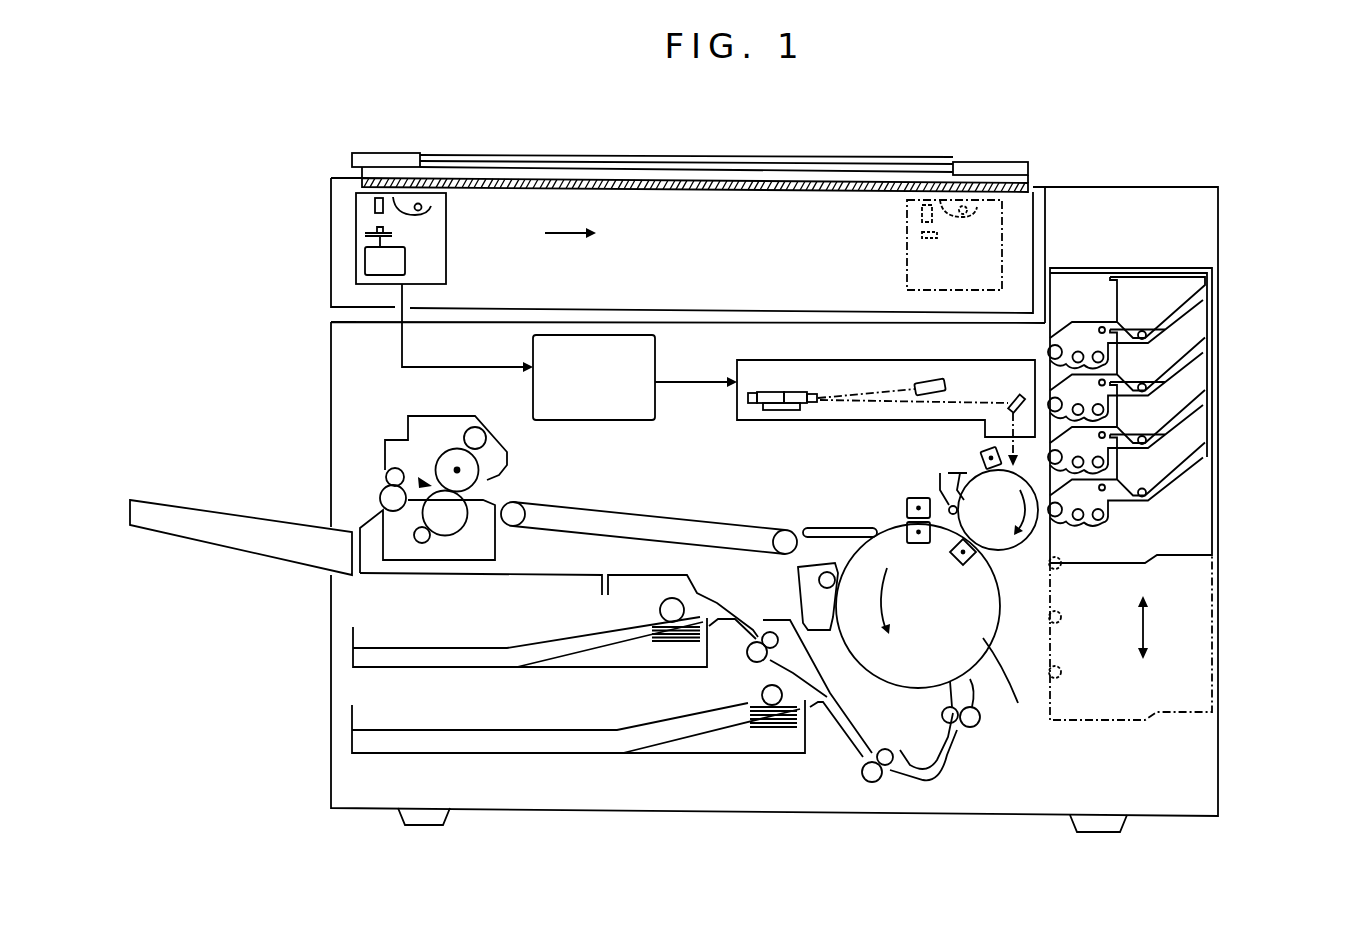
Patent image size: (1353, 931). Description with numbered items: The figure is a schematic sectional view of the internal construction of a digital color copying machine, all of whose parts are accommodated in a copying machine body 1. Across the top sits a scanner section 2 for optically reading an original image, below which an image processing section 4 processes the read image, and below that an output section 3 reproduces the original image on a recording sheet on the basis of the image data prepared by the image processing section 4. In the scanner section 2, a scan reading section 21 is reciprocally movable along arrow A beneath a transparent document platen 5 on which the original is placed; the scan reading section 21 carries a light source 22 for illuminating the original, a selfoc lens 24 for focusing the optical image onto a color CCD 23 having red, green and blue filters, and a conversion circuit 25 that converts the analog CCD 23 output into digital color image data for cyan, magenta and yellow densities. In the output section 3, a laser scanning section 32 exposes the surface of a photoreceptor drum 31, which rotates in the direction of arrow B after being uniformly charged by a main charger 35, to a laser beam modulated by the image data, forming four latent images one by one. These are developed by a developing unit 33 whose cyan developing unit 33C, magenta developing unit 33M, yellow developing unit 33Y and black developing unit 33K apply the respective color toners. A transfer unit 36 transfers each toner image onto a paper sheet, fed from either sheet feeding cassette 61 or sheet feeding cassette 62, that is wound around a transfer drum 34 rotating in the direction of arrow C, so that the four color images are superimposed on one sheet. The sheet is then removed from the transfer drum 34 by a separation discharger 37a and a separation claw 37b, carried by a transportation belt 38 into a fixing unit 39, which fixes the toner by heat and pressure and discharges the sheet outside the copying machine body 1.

The copying machine body 1 is at (371, 138).
The scanner section 2 is at (1024, 232).
The output section 3 is at (345, 392).
The image processing section 4 is at (640, 372).
The transparent document platen 5 is at (788, 183).
The scan reading section 21 is at (447, 273).
The light source 22 is at (430, 212).
The color CCD 23 is at (366, 234).
The selfoc lens 24 is at (375, 206).
The conversion circuit 25 is at (372, 264).
The photoreceptor drum 31 is at (1002, 545).
The laser scanning section 32 is at (793, 360).
The developing unit 33 is at (1180, 187).
The black developing unit 33K is at (1172, 296).
The yellow developing unit 33Y is at (1183, 333).
The magenta developing unit 33M is at (1185, 380).
The cyan developing unit 33C is at (1188, 427).
The transfer drum 34 is at (988, 688).
The main charger 35 is at (983, 451).
The transfer unit 36 is at (955, 565).
The separation discharger 37a is at (904, 530).
The separation claw 37b is at (836, 527).
The transportation belt 38 is at (664, 514).
The fixing unit 39 is at (522, 462).
The sheet feeding cassette 61 is at (580, 670).
The sheet feeding cassette 62 is at (577, 753).